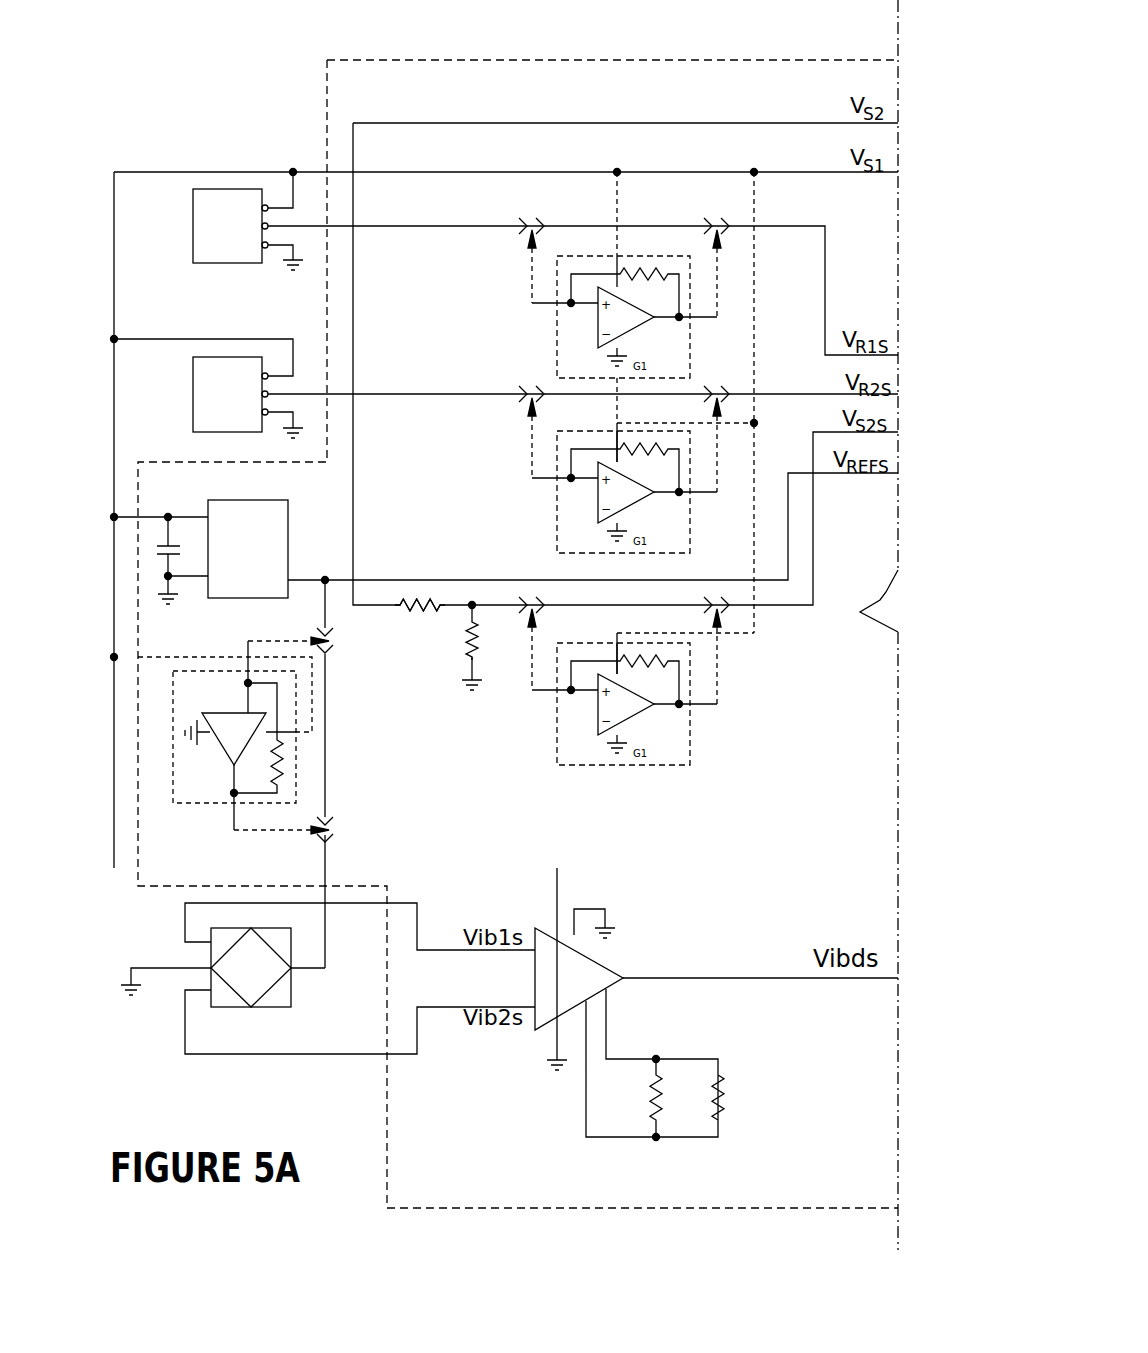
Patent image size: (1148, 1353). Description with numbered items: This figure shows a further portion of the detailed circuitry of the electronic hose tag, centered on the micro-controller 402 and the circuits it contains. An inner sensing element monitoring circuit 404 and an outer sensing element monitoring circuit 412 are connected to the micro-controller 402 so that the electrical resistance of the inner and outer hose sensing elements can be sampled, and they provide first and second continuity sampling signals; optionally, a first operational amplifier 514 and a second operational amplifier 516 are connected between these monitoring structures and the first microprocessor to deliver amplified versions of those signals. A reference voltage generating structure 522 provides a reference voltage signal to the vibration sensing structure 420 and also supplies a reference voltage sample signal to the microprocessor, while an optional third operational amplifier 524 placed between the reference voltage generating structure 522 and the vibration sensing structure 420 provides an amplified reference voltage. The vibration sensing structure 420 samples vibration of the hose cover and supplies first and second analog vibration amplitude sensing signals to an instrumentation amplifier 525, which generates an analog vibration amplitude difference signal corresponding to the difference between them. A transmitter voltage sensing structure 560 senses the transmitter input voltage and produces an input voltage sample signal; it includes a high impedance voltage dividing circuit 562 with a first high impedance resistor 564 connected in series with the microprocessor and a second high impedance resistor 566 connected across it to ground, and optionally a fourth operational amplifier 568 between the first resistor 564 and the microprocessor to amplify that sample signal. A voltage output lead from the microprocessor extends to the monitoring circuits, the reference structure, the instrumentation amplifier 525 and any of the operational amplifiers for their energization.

The micro-controller 402 is at (438, 52).
The inner sensing element monitoring circuit 404 is at (252, 237).
The outer sensing element monitoring circuit 412 is at (252, 405).
The vibration sensing structure 420 is at (275, 976).
The first operational amplifier 514 is at (545, 348).
The second operational amplifier 516 is at (545, 518).
The reference voltage generating structure 522 is at (281, 562).
The third operational amplifier 524 is at (209, 820).
The instrumentation amplifier 525 is at (648, 954).
The transmitter voltage sensing structure 560 is at (439, 692).
The high impedance voltage dividing circuit 562 is at (453, 657).
The first high impedance resistor 564 is at (405, 607).
The second high impedance resistor 566 is at (478, 658).
The fourth operational amplifier 568 is at (589, 782).